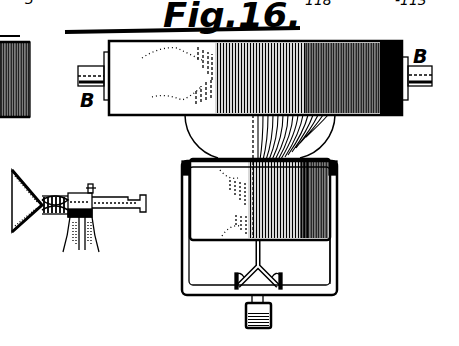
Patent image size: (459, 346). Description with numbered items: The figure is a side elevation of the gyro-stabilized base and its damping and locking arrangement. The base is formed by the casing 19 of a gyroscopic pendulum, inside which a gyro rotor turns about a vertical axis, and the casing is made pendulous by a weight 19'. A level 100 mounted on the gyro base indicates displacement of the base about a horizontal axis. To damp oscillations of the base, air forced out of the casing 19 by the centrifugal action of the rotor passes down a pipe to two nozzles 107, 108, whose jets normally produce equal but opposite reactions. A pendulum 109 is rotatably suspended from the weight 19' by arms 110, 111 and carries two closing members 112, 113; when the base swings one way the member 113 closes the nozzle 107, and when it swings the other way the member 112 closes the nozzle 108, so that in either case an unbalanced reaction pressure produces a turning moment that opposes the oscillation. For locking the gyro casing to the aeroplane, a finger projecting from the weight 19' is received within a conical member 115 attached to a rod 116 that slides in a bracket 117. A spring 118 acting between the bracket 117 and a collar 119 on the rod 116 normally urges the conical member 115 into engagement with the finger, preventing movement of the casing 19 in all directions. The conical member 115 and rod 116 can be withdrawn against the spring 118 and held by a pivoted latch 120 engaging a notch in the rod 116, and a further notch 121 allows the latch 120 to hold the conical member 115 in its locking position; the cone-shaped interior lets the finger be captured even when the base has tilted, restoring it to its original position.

The gyroscope casing 19 is at (204, 79).
The weight 19' is at (260, 199).
The level 100 is at (256, 270).
The nozzle 107 is at (242, 272).
The nozzle 108 is at (276, 272).
The pendulum 109 is at (271, 322).
The arm 110 is at (182, 256).
The arm 111 is at (337, 239).
The closing member 112 is at (283, 278).
The closing member 113 is at (234, 279).
The conical member 115 is at (18, 172).
The rod 116 is at (99, 213).
The bracket 117 is at (81, 252).
The spring 118 is at (55, 195).
The collar 119 is at (42, 222).
The pivoted latch 120 is at (96, 186).
The notch 121 is at (129, 197).